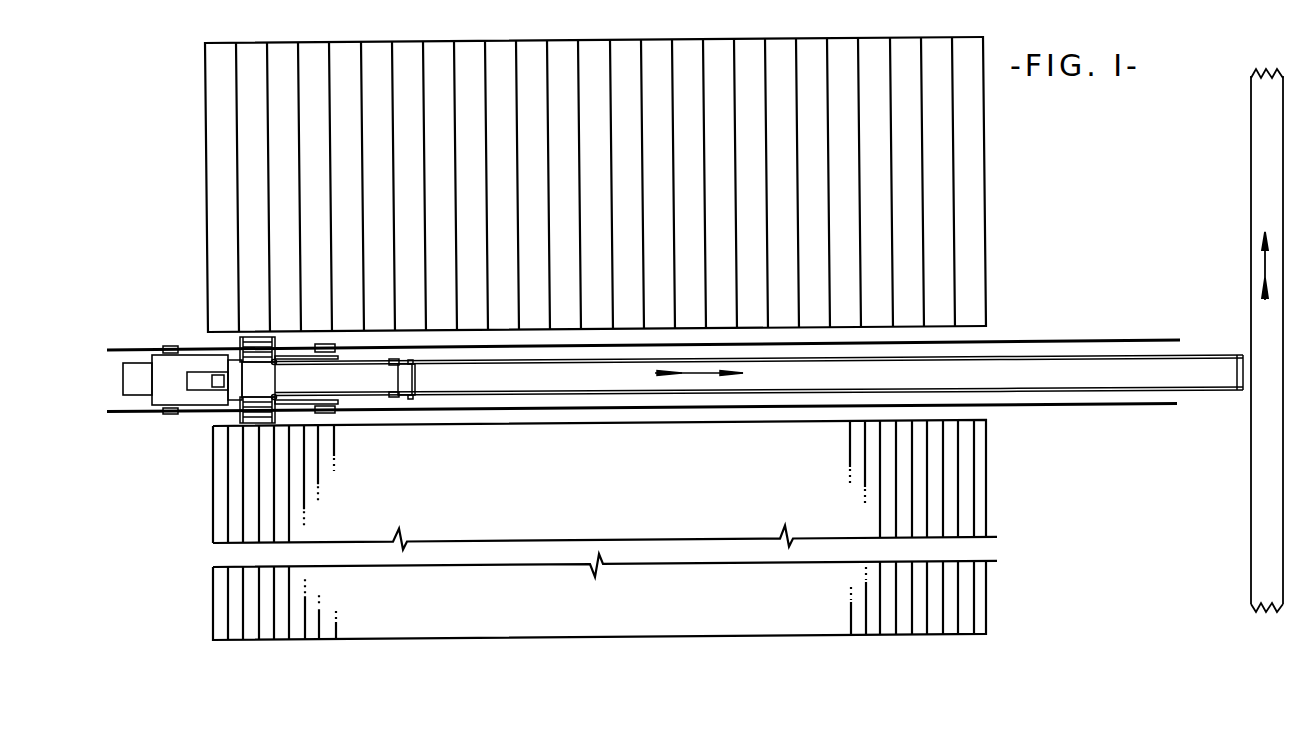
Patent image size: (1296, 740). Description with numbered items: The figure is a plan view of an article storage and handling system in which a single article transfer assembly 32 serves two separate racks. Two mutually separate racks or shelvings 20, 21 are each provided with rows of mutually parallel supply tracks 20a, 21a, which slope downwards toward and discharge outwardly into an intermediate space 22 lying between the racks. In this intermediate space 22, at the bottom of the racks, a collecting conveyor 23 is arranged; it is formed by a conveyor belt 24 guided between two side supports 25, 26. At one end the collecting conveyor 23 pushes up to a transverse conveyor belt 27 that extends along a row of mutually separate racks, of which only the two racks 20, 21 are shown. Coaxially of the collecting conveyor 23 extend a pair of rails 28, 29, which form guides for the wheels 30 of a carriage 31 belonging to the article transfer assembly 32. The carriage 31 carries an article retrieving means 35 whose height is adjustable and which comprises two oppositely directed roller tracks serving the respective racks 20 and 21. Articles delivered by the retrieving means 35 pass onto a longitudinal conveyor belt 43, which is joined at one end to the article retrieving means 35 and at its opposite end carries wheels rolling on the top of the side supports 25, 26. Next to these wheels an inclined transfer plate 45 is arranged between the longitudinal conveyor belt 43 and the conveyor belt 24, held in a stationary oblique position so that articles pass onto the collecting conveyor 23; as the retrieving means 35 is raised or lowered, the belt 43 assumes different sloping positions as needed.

The rack 20 is at (963, 200).
The supply tracks 20a is at (940, 282).
The rack 21 is at (965, 528).
The supply tracks 21a is at (948, 585).
The intermediate space 22 is at (933, 337).
The collecting conveyor 23 is at (972, 373).
The conveyor belt 24 is at (1090, 370).
The side support 25 is at (1028, 360).
The side support 26 is at (1061, 390).
The transverse conveyor belt 27 is at (1263, 510).
The rail 28 is at (1167, 342).
The rail 29 is at (1130, 404).
The wheels 30 is at (167, 347).
The carriage 31 is at (198, 363).
The article transfer assembly 32 is at (215, 363).
The article retrieving means 35 is at (257, 377).
The longitudinal conveyor belt 43 is at (343, 377).
The transfer plate 45 is at (410, 378).